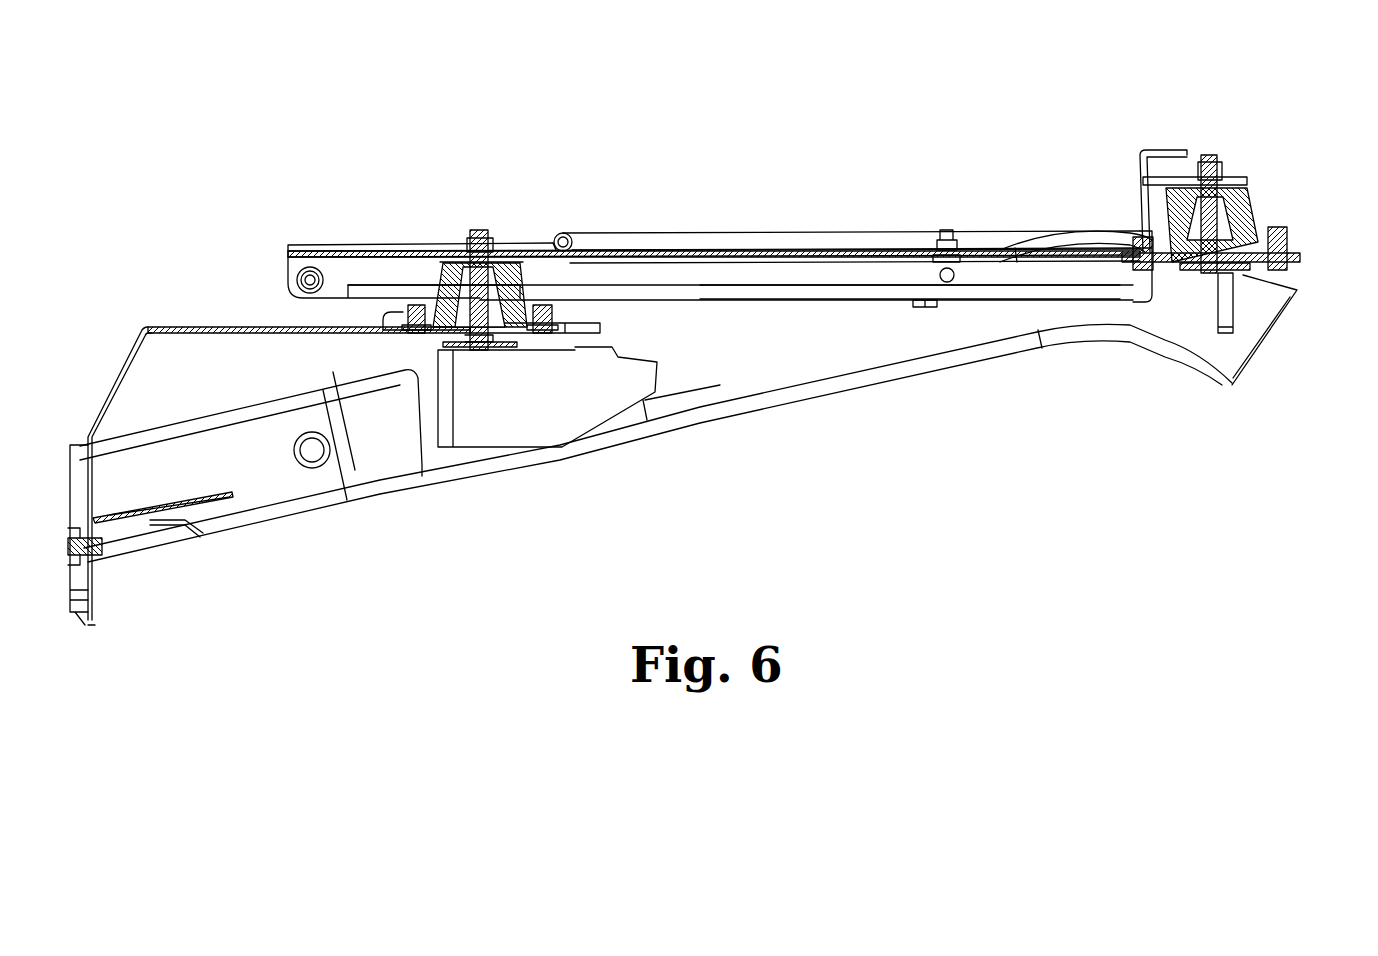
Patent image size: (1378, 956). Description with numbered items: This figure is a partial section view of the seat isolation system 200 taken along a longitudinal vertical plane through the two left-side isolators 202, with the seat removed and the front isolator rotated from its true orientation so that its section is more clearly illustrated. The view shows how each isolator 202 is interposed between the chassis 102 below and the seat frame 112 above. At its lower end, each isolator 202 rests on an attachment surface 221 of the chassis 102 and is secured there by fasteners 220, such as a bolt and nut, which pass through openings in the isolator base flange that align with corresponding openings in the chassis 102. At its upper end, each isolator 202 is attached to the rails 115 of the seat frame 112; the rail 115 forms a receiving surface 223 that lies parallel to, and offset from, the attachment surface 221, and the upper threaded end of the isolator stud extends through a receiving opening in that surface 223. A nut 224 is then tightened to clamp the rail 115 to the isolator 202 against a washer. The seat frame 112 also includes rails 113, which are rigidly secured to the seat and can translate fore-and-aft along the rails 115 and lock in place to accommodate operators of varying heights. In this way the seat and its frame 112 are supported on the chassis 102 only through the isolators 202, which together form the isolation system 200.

The chassis 102 is at (187, 337).
The seat frame 112 is at (272, 262).
The rails 113 is at (335, 251).
The rails 115 is at (1082, 247).
The seat isolation system 200 is at (272, 307).
The isolator 202 is at (525, 300).
The fasteners 220 is at (417, 332).
The attachment surface 221 is at (383, 312).
The receiving surface 223 is at (440, 265).
The nut 224 is at (490, 245).